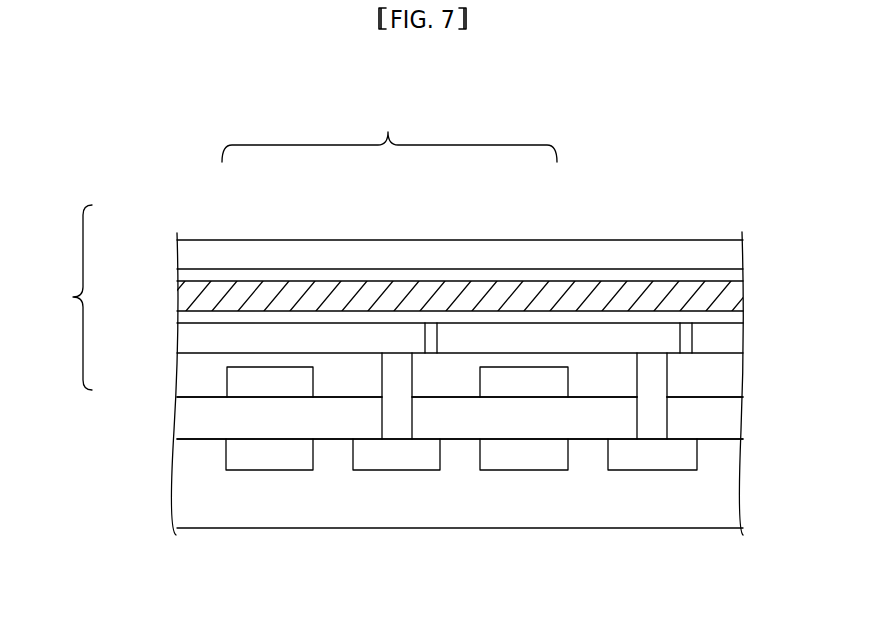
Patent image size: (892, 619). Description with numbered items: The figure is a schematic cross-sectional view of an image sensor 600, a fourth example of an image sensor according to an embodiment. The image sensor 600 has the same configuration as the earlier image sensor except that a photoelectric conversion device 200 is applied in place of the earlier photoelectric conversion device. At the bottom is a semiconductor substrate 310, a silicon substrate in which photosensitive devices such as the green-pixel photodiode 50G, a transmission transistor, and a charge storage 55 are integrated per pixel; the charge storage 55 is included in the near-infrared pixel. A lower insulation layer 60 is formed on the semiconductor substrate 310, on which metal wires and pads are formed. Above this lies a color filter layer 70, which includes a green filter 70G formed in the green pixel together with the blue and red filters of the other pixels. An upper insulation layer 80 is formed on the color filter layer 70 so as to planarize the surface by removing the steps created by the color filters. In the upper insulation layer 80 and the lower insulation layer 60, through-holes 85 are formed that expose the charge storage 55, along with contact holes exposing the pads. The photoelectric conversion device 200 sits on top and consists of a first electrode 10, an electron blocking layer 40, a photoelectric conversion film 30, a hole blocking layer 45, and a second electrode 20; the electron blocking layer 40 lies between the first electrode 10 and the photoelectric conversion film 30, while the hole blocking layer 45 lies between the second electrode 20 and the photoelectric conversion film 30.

The image sensor 600 is at (422, 341).
The photoelectric conversion device 200 is at (392, 297).
The second electrode 20 is at (192, 255).
The hole blocking layer 45 is at (192, 275).
The photoelectric conversion film 30 is at (192, 297).
The electron blocking layer 40 is at (192, 317).
The first electrode 10 is at (192, 337).
The color filter layer 70 is at (395, 249).
The green filter 70G is at (522, 380).
The through-hole 85 is at (638, 380).
The upper insulation layer 80 is at (728, 373).
The lower insulation layer 60 is at (728, 420).
The charge storage 55 is at (398, 455).
The photosensitive device 50G is at (528, 455).
The semiconductor substrate 310 is at (728, 483).